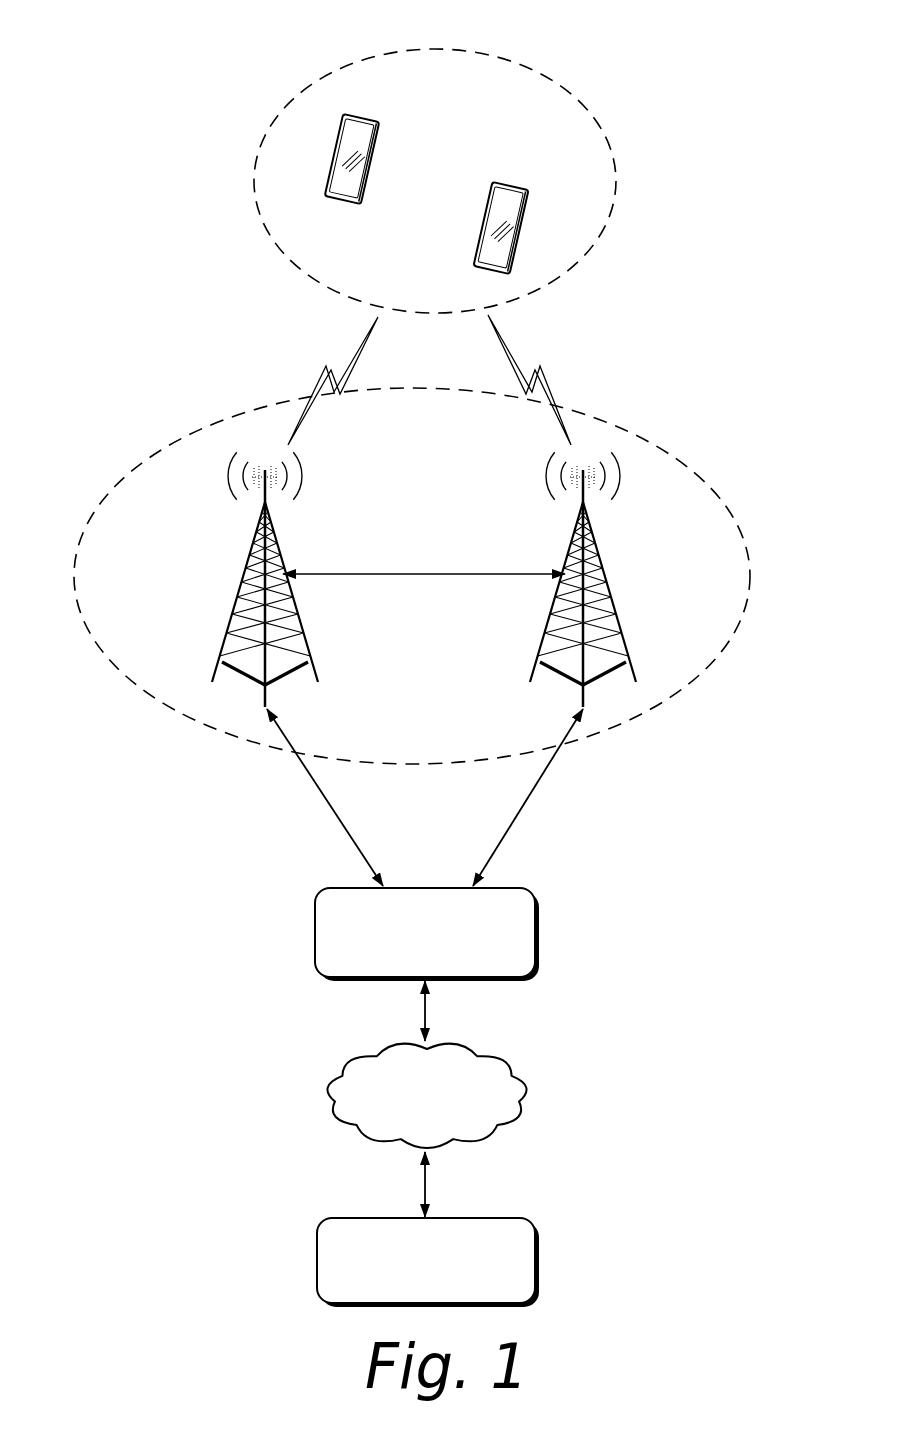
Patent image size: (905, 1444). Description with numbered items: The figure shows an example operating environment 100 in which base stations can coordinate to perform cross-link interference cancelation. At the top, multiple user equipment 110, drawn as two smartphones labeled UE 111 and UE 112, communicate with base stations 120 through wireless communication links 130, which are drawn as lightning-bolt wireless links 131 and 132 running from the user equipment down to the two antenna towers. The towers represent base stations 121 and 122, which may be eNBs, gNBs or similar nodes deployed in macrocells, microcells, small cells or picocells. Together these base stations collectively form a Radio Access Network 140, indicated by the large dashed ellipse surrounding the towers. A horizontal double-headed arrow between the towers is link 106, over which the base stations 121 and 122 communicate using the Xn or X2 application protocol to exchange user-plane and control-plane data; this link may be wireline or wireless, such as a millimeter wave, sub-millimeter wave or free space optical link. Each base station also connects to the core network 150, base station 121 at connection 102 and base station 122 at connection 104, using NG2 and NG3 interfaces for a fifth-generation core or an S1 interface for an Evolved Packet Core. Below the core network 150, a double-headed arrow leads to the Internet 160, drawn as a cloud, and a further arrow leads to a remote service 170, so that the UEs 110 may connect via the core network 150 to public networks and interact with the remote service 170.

The environment 100 is at (125, 61).
The user equipment 110 is at (594, 110).
The UE 111 is at (386, 110).
The UE 112 is at (521, 180).
The base stations 120 is at (440, 456).
The base station 121 is at (248, 553).
The base station 122 is at (600, 553).
The wireless communication links 130 is at (529, 326).
The wireless link 131 is at (328, 365).
The wireless link 132 is at (534, 363).
The Radio Access Network 140 is at (725, 500).
The link 106 is at (392, 571).
The connection 102 is at (320, 805).
The connection 104 is at (535, 805).
The core network 150 is at (405, 957).
The Internet 160 is at (407, 1111).
The remote service 170 is at (406, 1285).